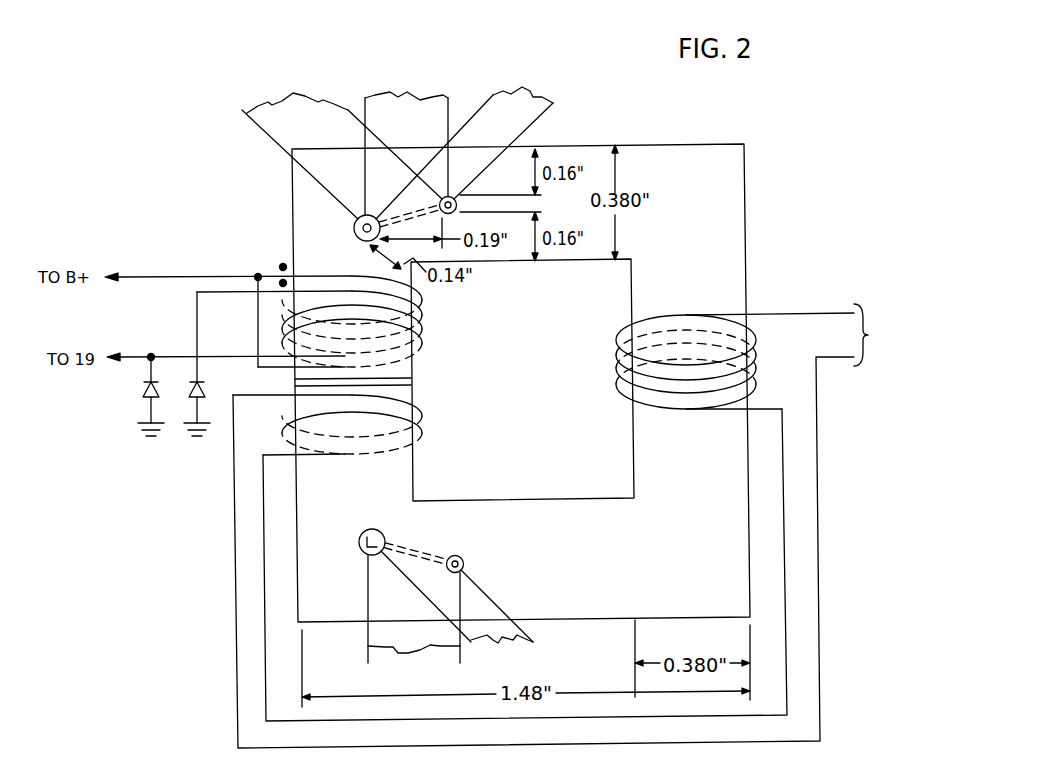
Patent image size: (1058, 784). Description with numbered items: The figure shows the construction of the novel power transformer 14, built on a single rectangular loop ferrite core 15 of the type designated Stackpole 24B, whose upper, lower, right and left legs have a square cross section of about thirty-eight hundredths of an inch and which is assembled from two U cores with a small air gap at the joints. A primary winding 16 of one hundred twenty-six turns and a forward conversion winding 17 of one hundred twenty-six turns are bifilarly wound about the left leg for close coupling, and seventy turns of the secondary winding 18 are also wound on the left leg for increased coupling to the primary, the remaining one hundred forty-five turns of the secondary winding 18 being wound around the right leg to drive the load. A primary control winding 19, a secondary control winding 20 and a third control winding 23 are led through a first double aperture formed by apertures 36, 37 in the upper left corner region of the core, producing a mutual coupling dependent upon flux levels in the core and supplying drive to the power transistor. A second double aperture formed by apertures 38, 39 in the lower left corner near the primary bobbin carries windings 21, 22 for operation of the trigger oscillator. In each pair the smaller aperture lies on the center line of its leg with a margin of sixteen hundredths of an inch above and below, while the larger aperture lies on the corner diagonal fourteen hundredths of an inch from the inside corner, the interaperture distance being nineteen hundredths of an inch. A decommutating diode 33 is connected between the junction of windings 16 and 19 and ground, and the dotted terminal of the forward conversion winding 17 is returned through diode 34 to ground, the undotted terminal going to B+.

The power transformer 14 is at (204, 712).
The rectangular loop core 15 is at (308, 203).
The primary winding 16 is at (318, 278).
The forward conversion winding 17 is at (335, 291).
The secondary winding 18 is at (423, 406).
The primary control winding 19 is at (342, 144).
The secondary control winding 20 is at (464, 143).
The winding 21 is at (414, 617).
The winding 22 is at (457, 609).
The third control winding 23 is at (406, 142).
The Stackpole 24B core material 24B is at (744, 150).
The decommutating diode 33 is at (143, 393).
The diode 34 is at (207, 392).
The aperture 36 is at (455, 198).
The aperture 37 is at (354, 230).
The aperture 38 is at (463, 558).
The aperture 39 is at (360, 534).